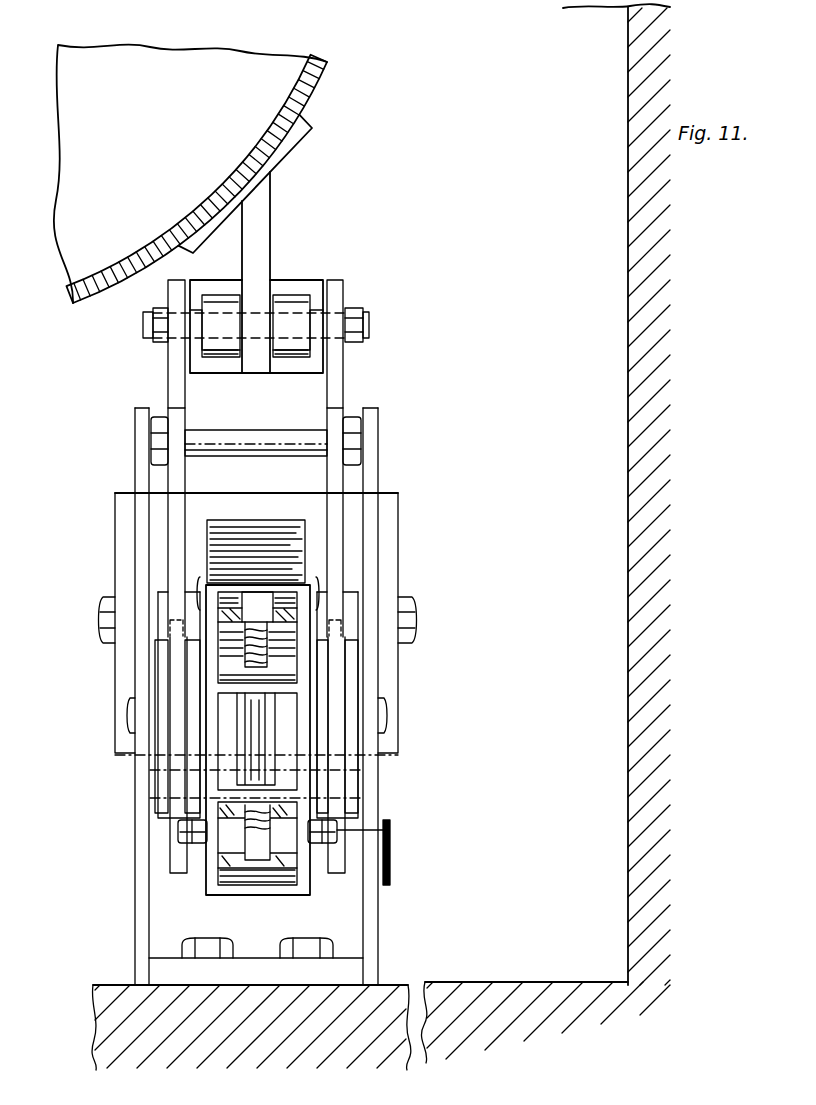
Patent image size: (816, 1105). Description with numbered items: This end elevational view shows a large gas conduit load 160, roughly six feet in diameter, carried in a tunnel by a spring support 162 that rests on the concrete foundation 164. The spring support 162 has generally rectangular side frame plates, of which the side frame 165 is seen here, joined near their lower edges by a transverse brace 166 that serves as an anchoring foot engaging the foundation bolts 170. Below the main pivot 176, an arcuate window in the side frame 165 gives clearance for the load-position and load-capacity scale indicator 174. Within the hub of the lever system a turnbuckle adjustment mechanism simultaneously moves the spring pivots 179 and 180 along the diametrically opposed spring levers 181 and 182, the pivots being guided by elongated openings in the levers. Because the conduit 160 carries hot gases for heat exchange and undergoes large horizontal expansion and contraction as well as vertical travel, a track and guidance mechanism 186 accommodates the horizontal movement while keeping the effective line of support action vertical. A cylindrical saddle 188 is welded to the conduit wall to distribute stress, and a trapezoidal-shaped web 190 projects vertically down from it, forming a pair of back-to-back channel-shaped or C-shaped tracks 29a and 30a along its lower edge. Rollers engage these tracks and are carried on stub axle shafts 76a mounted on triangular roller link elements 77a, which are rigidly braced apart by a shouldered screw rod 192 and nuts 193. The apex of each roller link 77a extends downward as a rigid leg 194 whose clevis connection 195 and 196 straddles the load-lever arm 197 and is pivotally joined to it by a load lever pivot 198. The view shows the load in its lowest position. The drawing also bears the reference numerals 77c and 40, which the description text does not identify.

The gas conduit load 160 is at (200, 67).
The cylindrical saddle 188 is at (292, 150).
The trapezoidal-shaped web 190 is at (270, 216).
The track and guidance mechanism 186 is at (361, 250).
The channel-shaped track 29a is at (218, 283).
The channel-shaped track 30a is at (294, 283).
The stub axle shaft 76a is at (322, 322).
The triangular roller link element 77a is at (338, 362).
The hanger arm 77c is at (168, 378).
The rigid leg 194 is at (176, 396).
The shouldered screw rod 192 is at (270, 434).
The nuts 193 is at (160, 418).
The side frame 165 is at (380, 440).
The spring support 162 is at (417, 519).
The nut 40 is at (104, 598).
The spring lever 181 is at (260, 536).
The spring pivot 179 is at (278, 595).
The spring lever 182 is at (242, 893).
The load-lever arm 197 is at (335, 692).
The clevis connection 195 is at (160, 776).
The clevis connection 196 is at (190, 782).
The main pivot 176 is at (130, 708).
The spring pivot 180 is at (185, 842).
The load lever pivot 198 is at (162, 812).
The load-position and load-capacity scale indicator 174 is at (386, 878).
The foundation bolts 170 is at (206, 945).
The transverse brace 166 is at (268, 982).
The concrete foundation 164 is at (235, 1058).